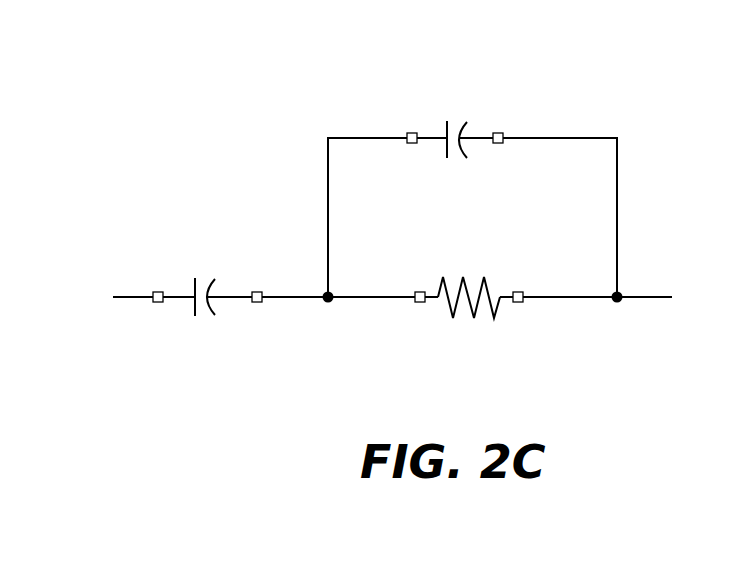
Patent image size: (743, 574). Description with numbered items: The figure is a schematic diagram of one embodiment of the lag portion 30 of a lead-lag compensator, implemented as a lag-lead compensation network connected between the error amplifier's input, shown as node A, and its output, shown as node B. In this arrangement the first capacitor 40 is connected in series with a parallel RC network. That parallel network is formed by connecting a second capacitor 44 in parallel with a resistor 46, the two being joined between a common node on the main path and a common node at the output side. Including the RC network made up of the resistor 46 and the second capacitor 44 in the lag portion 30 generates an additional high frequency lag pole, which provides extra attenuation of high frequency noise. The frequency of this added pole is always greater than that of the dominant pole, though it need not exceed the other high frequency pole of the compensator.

The lag portion 30 is at (558, 98).
The capacitor C1 40 is at (200, 318).
The second capacitor C2 44 is at (455, 160).
The resistor R2 46 is at (452, 314).